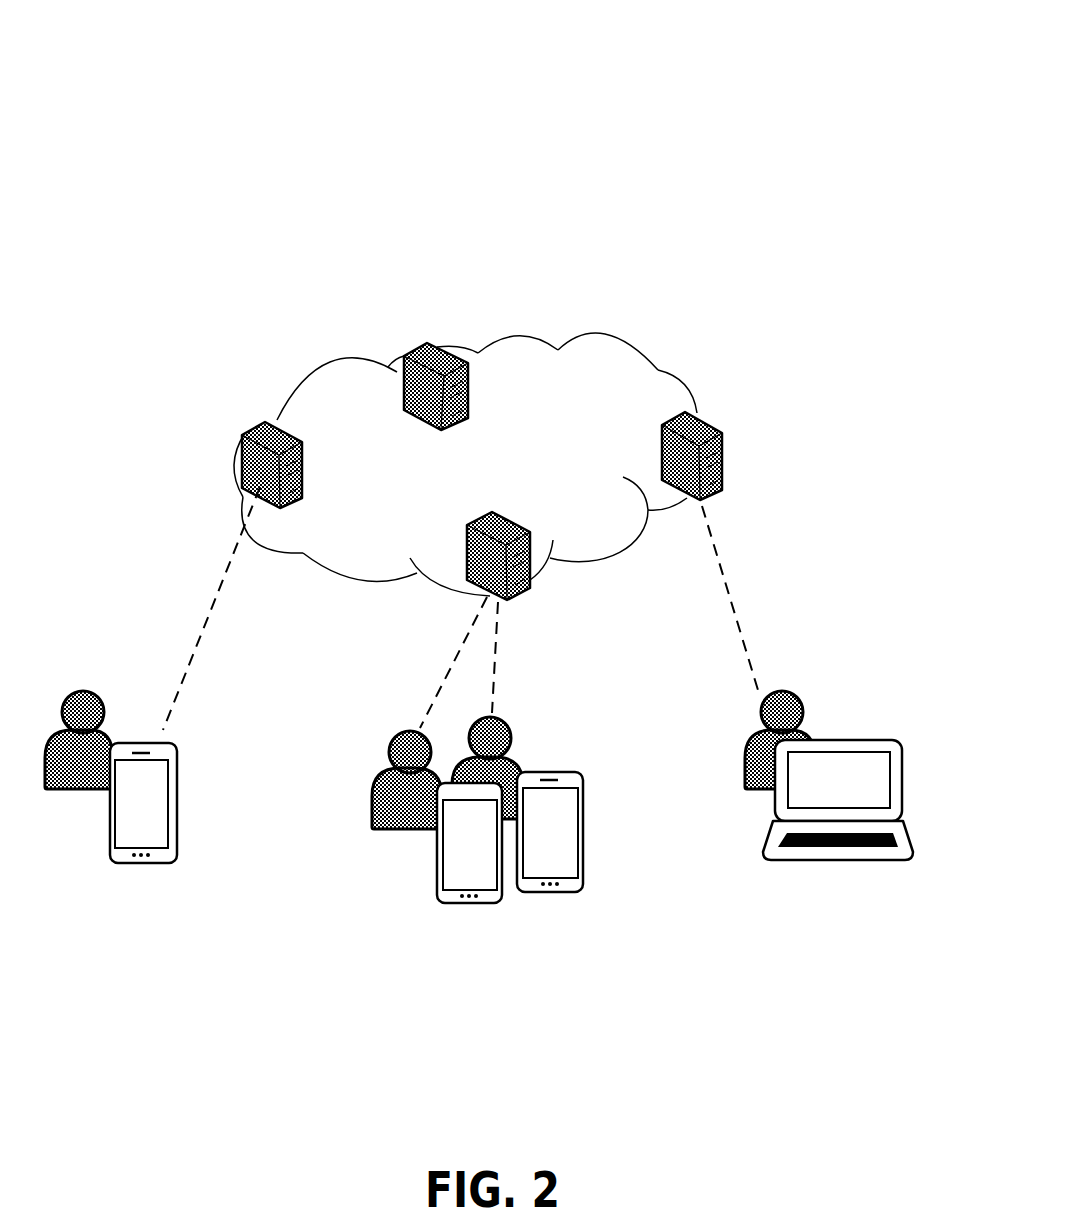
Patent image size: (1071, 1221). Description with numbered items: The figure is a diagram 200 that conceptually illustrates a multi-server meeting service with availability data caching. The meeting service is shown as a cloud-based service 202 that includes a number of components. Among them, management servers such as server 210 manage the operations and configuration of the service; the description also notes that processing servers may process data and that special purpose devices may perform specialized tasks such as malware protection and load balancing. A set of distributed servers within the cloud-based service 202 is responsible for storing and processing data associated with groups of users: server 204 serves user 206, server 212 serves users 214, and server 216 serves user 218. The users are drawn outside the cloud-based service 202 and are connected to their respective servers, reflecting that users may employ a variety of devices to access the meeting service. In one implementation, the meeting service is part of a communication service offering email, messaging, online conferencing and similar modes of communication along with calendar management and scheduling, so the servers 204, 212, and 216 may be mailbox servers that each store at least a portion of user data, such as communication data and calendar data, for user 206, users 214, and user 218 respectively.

The diagram 200 is at (802, 80).
The cloud-based service 202 is at (335, 345).
The server 204 is at (232, 433).
The user 206 is at (62, 680).
The server 210 is at (435, 332).
The server 212 is at (508, 503).
The users 214 is at (527, 717).
The server 216 is at (698, 412).
The user 218 is at (798, 685).